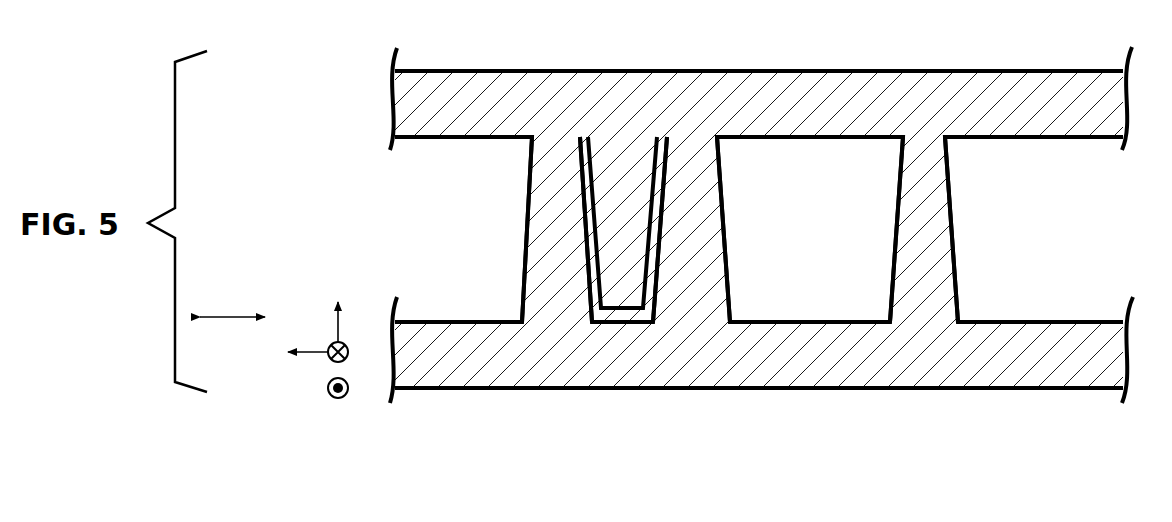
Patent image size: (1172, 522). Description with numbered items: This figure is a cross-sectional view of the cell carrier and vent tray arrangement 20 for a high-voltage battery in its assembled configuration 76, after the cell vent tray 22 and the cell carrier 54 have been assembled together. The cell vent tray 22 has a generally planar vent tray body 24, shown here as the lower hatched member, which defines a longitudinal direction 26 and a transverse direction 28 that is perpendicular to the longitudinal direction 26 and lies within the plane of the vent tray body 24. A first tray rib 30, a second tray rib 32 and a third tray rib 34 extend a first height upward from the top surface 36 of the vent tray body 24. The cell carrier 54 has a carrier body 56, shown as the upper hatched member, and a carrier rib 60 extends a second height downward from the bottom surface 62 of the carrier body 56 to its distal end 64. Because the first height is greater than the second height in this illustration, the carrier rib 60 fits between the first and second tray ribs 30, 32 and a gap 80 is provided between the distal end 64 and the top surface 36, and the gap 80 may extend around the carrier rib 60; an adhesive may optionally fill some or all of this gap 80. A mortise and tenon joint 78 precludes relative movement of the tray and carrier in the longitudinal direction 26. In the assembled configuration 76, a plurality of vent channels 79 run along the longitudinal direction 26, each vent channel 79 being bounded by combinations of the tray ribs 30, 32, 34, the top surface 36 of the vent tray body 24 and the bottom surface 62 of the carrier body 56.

The cell carrier and vent tray arrangement 20 is at (685, 238).
The assembled configuration 76 is at (720, 238).
The cell vent tray 22 is at (396, 240).
The vent tray body 24 is at (776, 370).
The longitudinal direction 26 is at (329, 360).
The transverse direction 28 is at (230, 317).
The first tray rib 30 is at (543, 288).
The second tray rib 32 is at (680, 288).
The third tray rib 34 is at (910, 288).
The top surface 36 is at (1070, 322).
The cell carrier 54 is at (396, 194).
The carrier body 56 is at (776, 120).
The carrier rib 60 is at (608, 205).
The bottom surface 62 is at (1067, 138).
The distal end 64 is at (610, 308).
The mortise and tenon joint 78 is at (748, 183).
The vent channel 79 is at (438, 258).
The gap 80 is at (584, 188).